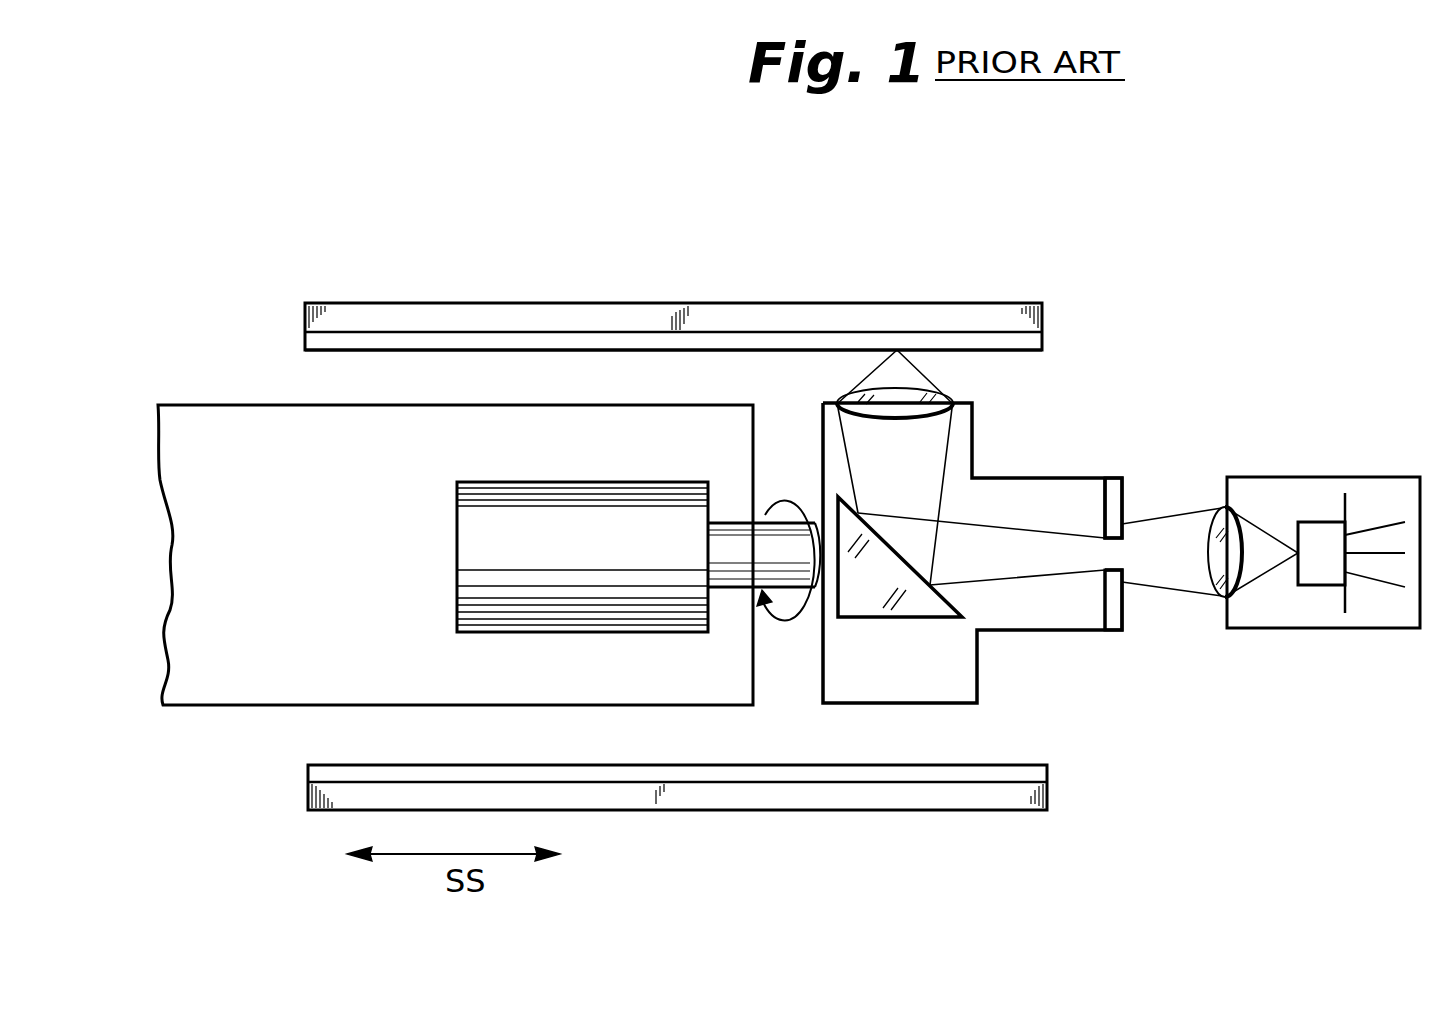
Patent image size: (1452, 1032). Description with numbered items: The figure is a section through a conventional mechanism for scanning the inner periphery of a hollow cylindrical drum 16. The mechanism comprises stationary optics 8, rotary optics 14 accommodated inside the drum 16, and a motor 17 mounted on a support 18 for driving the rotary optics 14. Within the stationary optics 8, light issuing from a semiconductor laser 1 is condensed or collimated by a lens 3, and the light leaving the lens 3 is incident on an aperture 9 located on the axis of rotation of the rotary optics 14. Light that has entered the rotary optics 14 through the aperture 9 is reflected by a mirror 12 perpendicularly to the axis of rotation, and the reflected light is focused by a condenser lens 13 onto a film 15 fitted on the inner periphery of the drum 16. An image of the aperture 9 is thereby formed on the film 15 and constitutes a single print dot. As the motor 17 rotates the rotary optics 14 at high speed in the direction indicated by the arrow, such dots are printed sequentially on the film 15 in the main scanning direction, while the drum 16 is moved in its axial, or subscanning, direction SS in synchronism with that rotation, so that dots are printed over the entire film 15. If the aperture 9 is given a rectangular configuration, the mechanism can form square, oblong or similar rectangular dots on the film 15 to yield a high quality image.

The semiconductor laser 1 is at (1320, 590).
The lens 3 is at (1203, 603).
The stationary optics 8 is at (1297, 477).
The aperture 9 is at (1113, 497).
The mirror 12 is at (930, 602).
The condenser lens 13 is at (952, 400).
The rotary optics 14 is at (1000, 476).
The film 15 is at (733, 342).
The hollow cylindrical drum 16 is at (592, 323).
The motor 17 is at (538, 498).
The support 18 is at (325, 405).